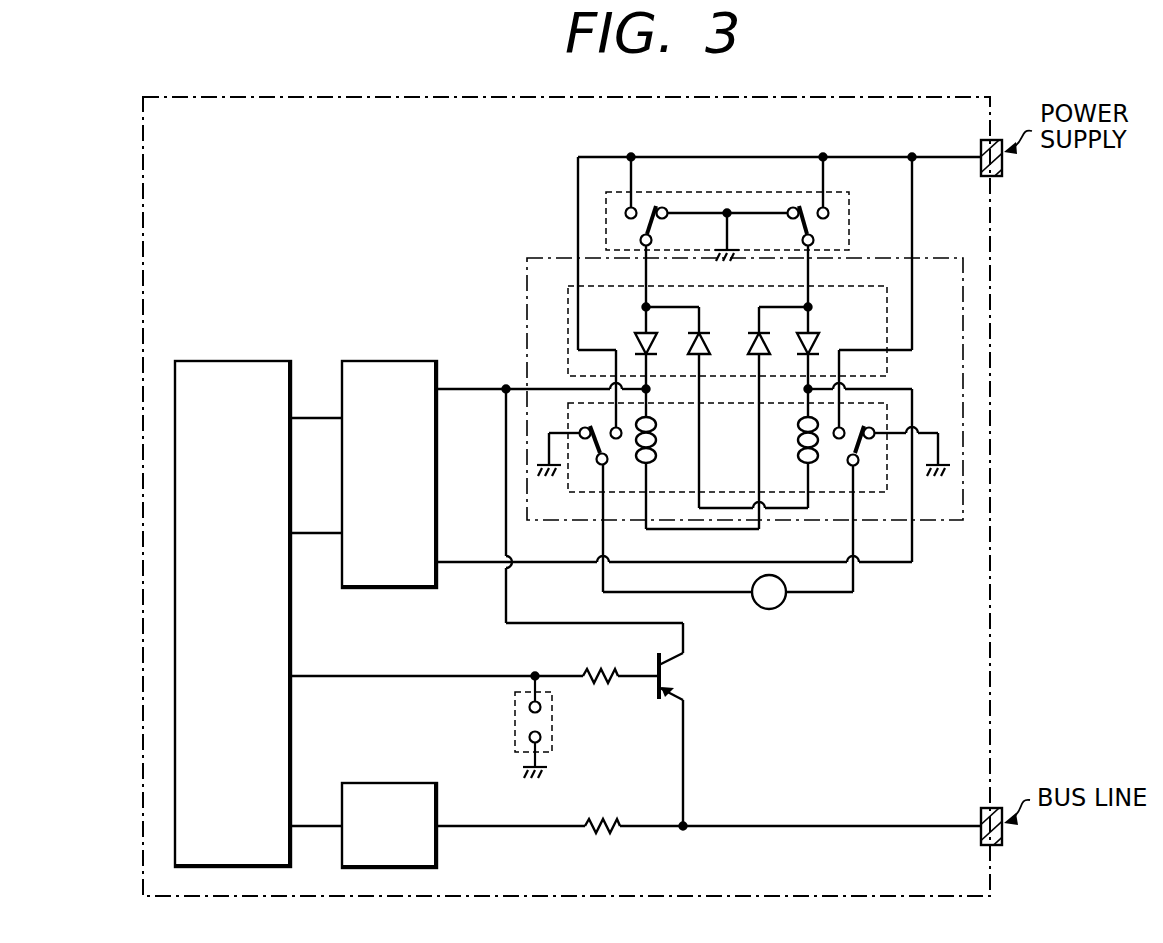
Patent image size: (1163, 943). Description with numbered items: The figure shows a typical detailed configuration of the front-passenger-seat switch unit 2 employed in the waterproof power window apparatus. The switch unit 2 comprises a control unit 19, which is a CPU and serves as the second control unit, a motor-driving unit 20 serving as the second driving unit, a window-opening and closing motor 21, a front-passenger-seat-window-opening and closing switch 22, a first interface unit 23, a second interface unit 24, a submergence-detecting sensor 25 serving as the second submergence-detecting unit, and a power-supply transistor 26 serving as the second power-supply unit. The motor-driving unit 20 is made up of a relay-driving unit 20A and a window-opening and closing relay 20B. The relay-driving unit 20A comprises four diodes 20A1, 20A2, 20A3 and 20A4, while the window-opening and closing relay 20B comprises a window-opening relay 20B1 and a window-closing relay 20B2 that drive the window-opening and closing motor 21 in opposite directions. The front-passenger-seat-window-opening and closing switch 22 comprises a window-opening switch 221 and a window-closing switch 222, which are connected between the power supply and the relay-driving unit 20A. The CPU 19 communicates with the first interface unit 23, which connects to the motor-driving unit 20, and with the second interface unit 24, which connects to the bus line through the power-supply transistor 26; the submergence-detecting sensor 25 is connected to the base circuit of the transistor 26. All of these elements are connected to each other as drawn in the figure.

The front-passenger-seat switch unit 2 is at (897, 96).
The control unit 19 is at (250, 361).
The motor-driving unit 20 is at (942, 258).
The relay-driving unit 20A is at (768, 387).
The diode 20A1 is at (640, 330).
The diode 20A2 is at (752, 330).
The diode 20A3 is at (704, 357).
The diode 20A4 is at (814, 330).
The window-opening and closing relay 20B is at (753, 483).
The window-opening relay 20B1 is at (636, 470).
The window-closing relay 20B2 is at (770, 490).
The window-opening and closing motor 21 is at (782, 606).
The front-passenger-seat-window-opening and closing switch 22 is at (753, 209).
The window-opening switch 221 is at (657, 222).
The window-closing switch 222 is at (785, 228).
The first interface unit 23 is at (412, 361).
The second interface unit 24 is at (413, 783).
The submergence-detecting sensor 25 is at (553, 723).
The power-supply transistor 26 is at (681, 673).